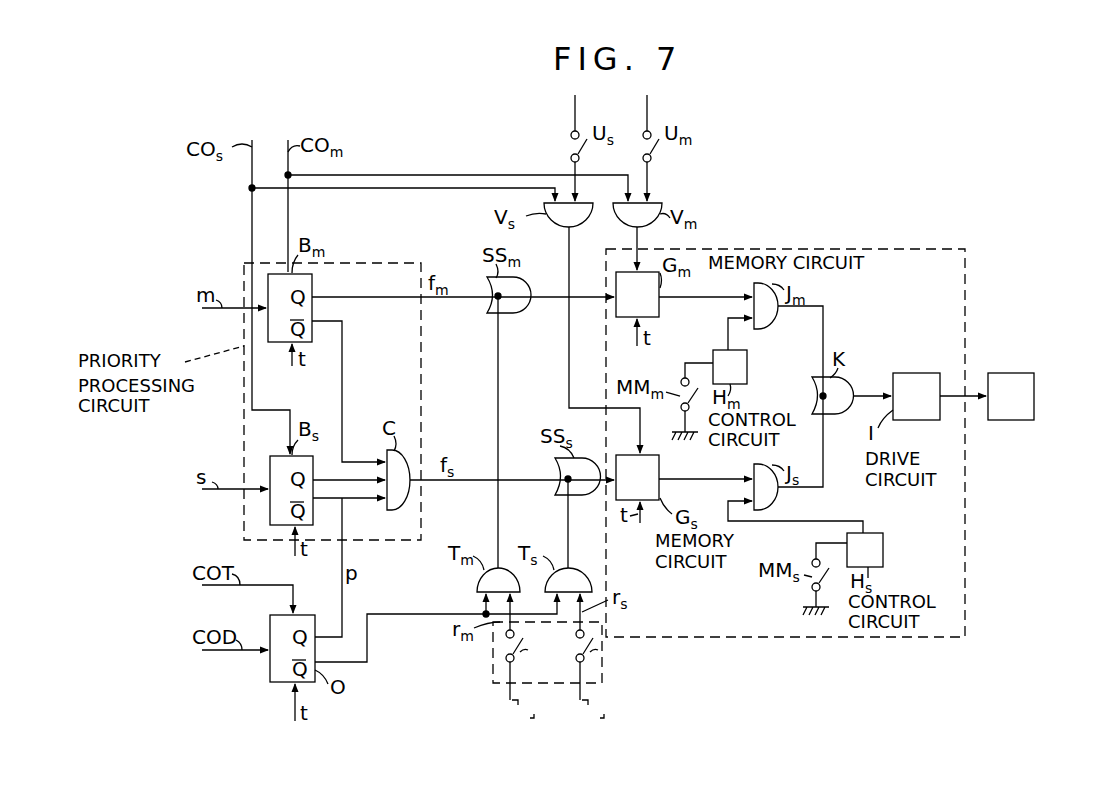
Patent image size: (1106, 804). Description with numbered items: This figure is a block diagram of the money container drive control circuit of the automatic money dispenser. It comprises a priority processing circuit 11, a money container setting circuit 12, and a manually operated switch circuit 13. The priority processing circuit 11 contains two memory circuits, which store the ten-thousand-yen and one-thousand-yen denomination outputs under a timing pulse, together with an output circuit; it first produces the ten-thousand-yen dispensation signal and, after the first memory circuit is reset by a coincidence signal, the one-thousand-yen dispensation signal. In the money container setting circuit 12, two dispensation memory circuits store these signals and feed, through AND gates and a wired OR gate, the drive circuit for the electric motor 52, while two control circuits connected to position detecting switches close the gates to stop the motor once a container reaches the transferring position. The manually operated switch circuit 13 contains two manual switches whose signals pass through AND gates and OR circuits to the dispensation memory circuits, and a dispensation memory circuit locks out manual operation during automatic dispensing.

The priority processing circuit 11 is at (398, 262).
The money container setting circuit 12 is at (810, 249).
The manually operated switch circuit 13 is at (602, 683).
The electric motor 52 is at (990, 420).